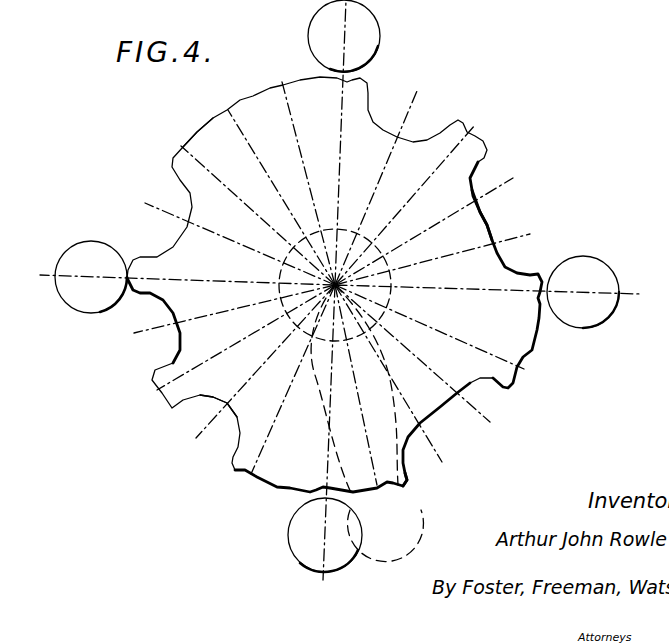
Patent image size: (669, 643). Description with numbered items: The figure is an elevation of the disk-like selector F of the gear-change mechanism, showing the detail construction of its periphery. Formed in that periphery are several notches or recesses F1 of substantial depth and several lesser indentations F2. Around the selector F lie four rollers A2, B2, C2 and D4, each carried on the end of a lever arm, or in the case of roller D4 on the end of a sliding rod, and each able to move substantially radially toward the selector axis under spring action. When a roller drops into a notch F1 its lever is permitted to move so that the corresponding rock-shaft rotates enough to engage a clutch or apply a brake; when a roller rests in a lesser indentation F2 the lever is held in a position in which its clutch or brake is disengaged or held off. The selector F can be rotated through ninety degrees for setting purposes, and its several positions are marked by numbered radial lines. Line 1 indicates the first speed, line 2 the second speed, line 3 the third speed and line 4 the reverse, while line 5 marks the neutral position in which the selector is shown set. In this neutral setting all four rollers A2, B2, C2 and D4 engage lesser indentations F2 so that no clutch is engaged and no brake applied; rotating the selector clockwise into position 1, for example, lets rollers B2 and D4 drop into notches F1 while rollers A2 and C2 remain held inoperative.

The radial line No. 1 is at (383, 512).
The radial line No. 2 is at (456, 486).
The radial line No. 3 is at (511, 441).
The radial line No. 4 is at (550, 381).
The radial line No. 5 is at (341, 295).
The roller A2 is at (312, 517).
The roller B2 is at (97, 258).
The roller C2 is at (360, 32).
The roller D4 is at (577, 279).
The selector F is at (468, 230).
The notch F1 is at (227, 402).
The lesser indentation F2 is at (185, 147).